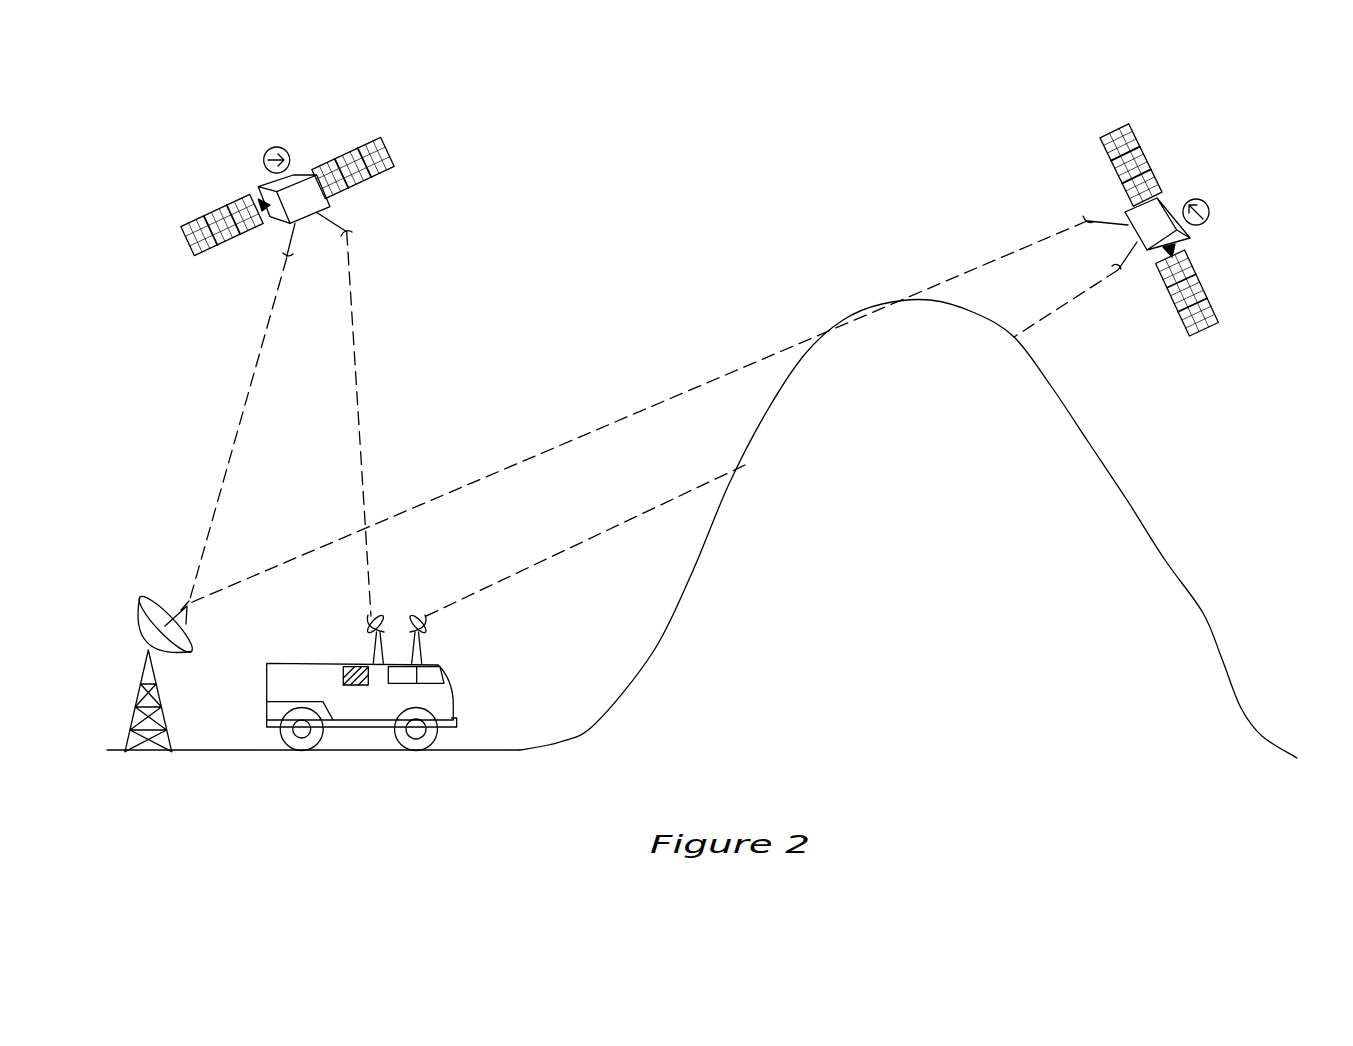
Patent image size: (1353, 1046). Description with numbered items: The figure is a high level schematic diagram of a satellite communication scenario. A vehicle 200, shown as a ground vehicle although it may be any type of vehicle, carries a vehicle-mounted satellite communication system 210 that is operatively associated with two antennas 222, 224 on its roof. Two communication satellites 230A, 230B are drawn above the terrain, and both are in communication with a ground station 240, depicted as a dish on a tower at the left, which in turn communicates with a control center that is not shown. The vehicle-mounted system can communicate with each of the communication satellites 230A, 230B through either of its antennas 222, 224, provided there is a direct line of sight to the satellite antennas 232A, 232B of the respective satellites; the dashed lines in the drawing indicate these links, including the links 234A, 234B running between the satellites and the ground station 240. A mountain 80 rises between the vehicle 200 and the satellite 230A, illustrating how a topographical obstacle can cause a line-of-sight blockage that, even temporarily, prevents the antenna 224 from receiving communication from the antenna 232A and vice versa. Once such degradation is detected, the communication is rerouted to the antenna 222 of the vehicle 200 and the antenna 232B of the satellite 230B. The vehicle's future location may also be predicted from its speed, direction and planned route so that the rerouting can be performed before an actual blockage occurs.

The mountain 80 is at (910, 452).
The vehicle 200 is at (265, 678).
The vehicle-mounted satellite communication system 210 is at (346, 675).
The antenna 222 is at (388, 618).
The antenna 224 is at (426, 621).
The communication satellite 230A is at (1193, 200).
The communication satellite 230B is at (257, 187).
The antenna 232A is at (1116, 270).
The antenna 232B is at (350, 230).
The first satellite feeder link 234A is at (1087, 220).
The second satellite feeder link 234B is at (287, 258).
The ground station 240 is at (165, 606).